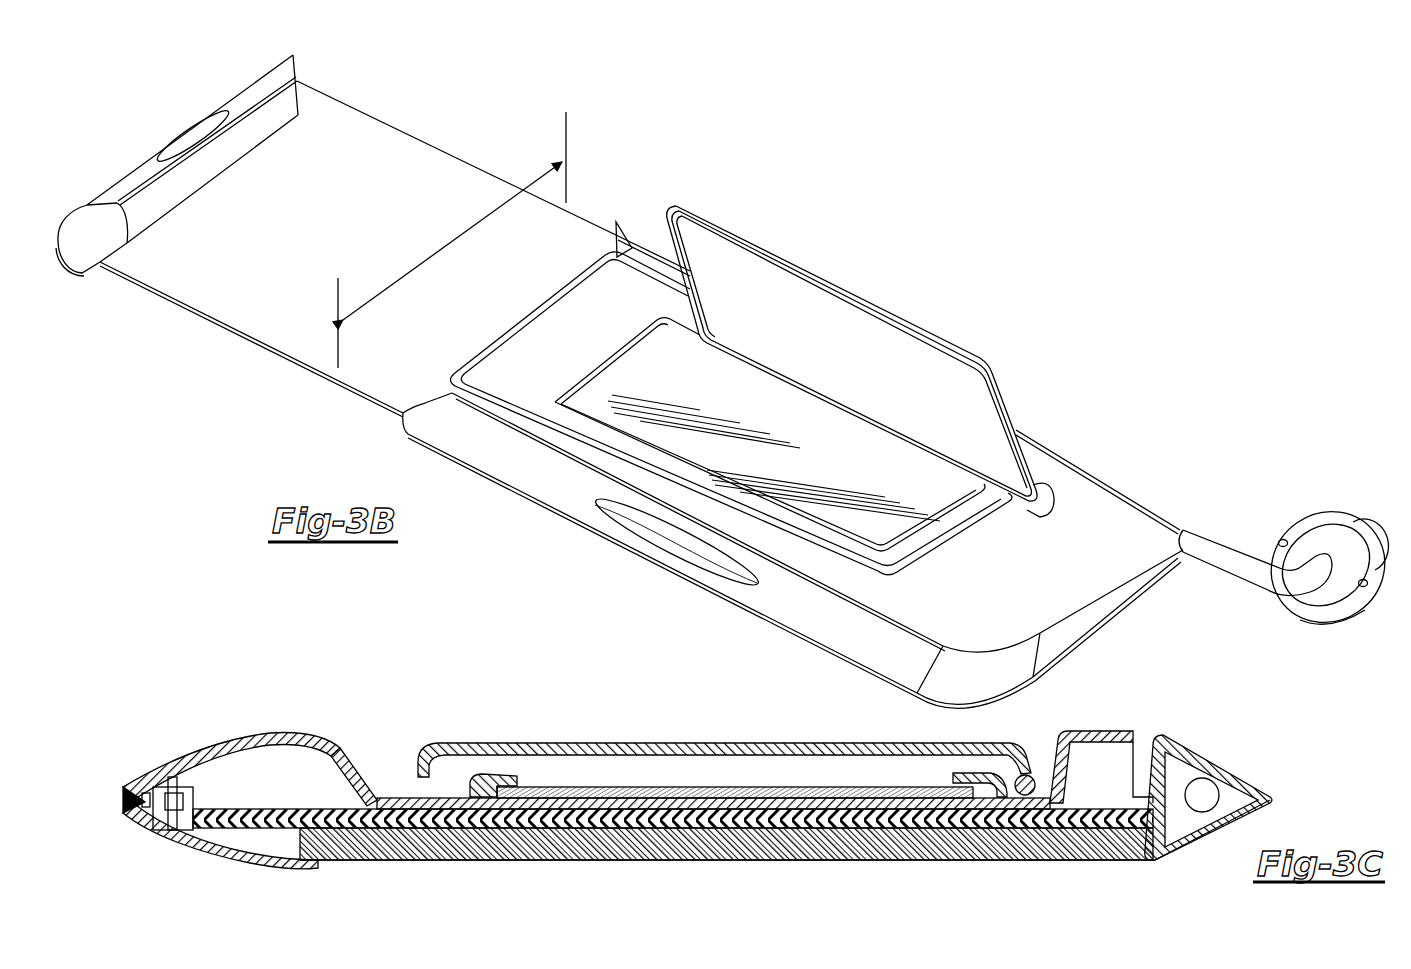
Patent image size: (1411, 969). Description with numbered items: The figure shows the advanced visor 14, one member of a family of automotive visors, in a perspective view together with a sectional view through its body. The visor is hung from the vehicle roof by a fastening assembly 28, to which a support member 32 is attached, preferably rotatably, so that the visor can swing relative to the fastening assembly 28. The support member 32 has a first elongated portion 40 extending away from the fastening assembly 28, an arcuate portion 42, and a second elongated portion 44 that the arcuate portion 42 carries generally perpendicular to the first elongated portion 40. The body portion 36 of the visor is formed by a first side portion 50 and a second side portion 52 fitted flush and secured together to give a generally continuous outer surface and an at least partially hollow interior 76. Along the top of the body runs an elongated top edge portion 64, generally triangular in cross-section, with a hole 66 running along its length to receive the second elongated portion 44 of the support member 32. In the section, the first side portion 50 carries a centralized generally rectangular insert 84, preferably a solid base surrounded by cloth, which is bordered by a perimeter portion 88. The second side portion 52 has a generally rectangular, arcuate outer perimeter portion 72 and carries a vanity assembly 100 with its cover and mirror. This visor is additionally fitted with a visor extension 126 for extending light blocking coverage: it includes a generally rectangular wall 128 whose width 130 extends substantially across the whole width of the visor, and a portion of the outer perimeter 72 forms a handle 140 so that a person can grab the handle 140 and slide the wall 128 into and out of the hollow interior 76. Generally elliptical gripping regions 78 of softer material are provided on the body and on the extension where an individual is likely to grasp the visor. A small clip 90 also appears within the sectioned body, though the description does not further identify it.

In FIG. 3B, the advanced visor 14 is at (817, 707).
In FIG. 3B, the fastening assembly 28 is at (1347, 640).
In FIG. 3B, the support member 32 is at (1220, 564).
In FIG. 3B, the body portion 36 is at (635, 582).
In FIG. 3C, the body portion 36 is at (797, 860).
In FIG. 3B, the first elongated portion 40 is at (1360, 532).
In FIG. 3B, the arcuate portion 42 is at (1287, 594).
In FIG. 3B, the second elongated portion 44 is at (1235, 533).
In FIG. 3C, the first side portion 50 is at (513, 862).
In FIG. 3B, the second side portion 52 is at (620, 250).
In FIG. 3C, the second side portion 52 is at (1085, 720).
In FIG. 3C, the elongated top edge portion 64 is at (1190, 767).
In FIG. 3C, the hole 66 is at (1212, 795).
In FIG. 3B, the outer perimeter portion 72 is at (437, 420).
In FIG. 3C, the outer perimeter portion 72 is at (190, 757).
In FIG. 3C, the hollow interior 76 is at (293, 767).
In FIG. 3B, the gripping region 78 is at (193, 137).
In FIG. 3C, the insert 84 is at (627, 860).
In FIG. 3C, the perimeter portion 88 is at (200, 847).
In FIG. 3C, the retaining clip 90 is at (200, 805).
In FIG. 3C, the vanity assembly 100 is at (713, 737).
In FIG. 3B, the visor extension 126 is at (436, 132).
In FIG. 3C, the visor extension 126 is at (337, 820).
In FIG. 3B, the wall 128 is at (370, 147).
In FIG. 3B, the width 130 is at (440, 250).
In FIG. 3B, the handle 140 is at (115, 193).